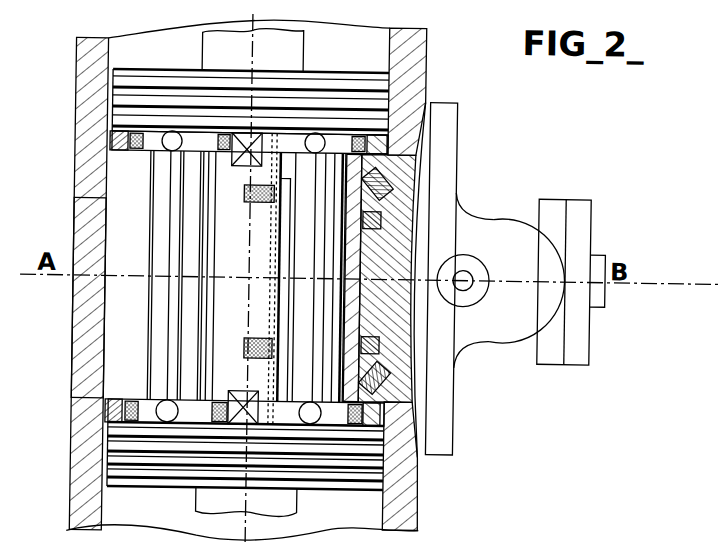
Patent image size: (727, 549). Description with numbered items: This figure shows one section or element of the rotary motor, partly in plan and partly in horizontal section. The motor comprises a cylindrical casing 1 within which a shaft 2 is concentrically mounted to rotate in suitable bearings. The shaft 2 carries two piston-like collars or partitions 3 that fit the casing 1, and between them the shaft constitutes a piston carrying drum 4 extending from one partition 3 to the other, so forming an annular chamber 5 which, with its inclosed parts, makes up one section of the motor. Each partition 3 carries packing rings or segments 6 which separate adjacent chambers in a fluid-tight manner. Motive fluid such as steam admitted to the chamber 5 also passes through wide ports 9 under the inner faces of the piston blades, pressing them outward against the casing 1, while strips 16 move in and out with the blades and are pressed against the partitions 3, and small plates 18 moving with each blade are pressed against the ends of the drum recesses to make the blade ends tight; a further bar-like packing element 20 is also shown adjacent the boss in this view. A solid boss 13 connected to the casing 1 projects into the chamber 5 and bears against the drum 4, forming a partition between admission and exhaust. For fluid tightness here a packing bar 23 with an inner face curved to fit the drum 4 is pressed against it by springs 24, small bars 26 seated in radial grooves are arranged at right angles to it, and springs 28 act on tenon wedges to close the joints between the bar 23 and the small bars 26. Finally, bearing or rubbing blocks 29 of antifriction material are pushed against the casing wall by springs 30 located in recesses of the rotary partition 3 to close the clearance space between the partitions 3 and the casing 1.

The cylindrical casing 1 is at (75, 68).
The shaft 2 is at (290, 52).
The partitions 3 is at (113, 412).
The piston carrying drum 4 is at (158, 317).
The annular chamber 5 is at (97, 305).
The packing rings 6 is at (137, 82).
The ports 9 is at (283, 228).
The boss 13 is at (461, 202).
The strips 16 is at (264, 425).
The small plate 18 is at (217, 424).
The lobe 20 is at (441, 344).
The packing bar 23 is at (457, 205).
The springs 24 is at (371, 213).
The small bars 26 is at (430, 135).
The springs 28 is at (371, 183).
The bearing blocks 29 is at (378, 168).
The springs 30 is at (425, 98).